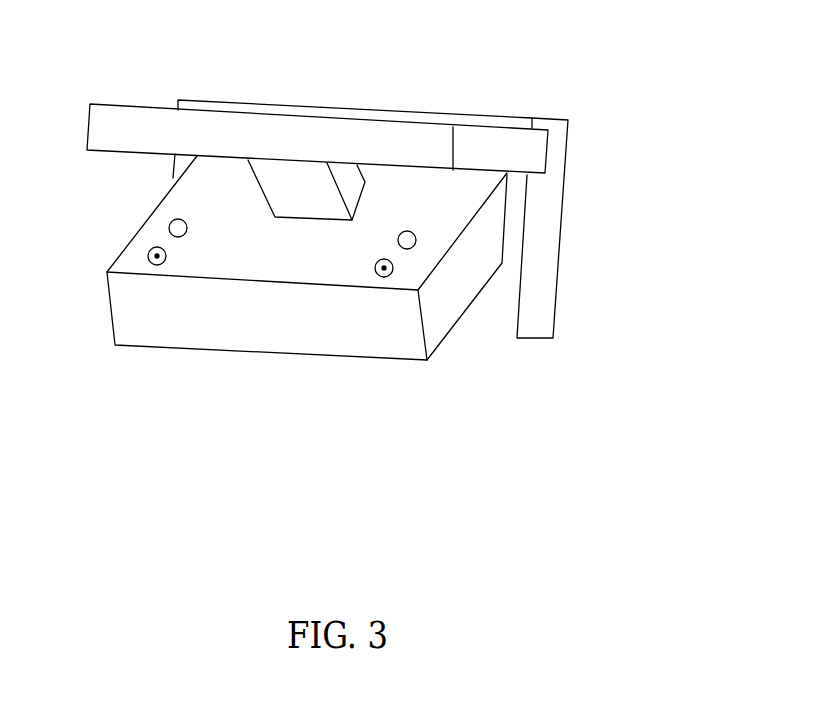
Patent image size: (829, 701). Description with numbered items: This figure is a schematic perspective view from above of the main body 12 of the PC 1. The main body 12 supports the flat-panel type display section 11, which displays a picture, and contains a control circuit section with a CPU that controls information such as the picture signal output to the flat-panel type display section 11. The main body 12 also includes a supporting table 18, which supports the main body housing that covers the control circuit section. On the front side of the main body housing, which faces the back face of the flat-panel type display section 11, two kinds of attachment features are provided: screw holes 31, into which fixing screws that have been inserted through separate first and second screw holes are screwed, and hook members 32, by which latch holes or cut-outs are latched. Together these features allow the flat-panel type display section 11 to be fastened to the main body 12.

The PC 1 is at (519, 470).
The flat-panel type display section 11 is at (427, 137).
The main body 12 is at (308, 338).
The supporting table 18 is at (543, 243).
The screw holes 31 is at (148, 255).
The hook members 32 is at (169, 225).